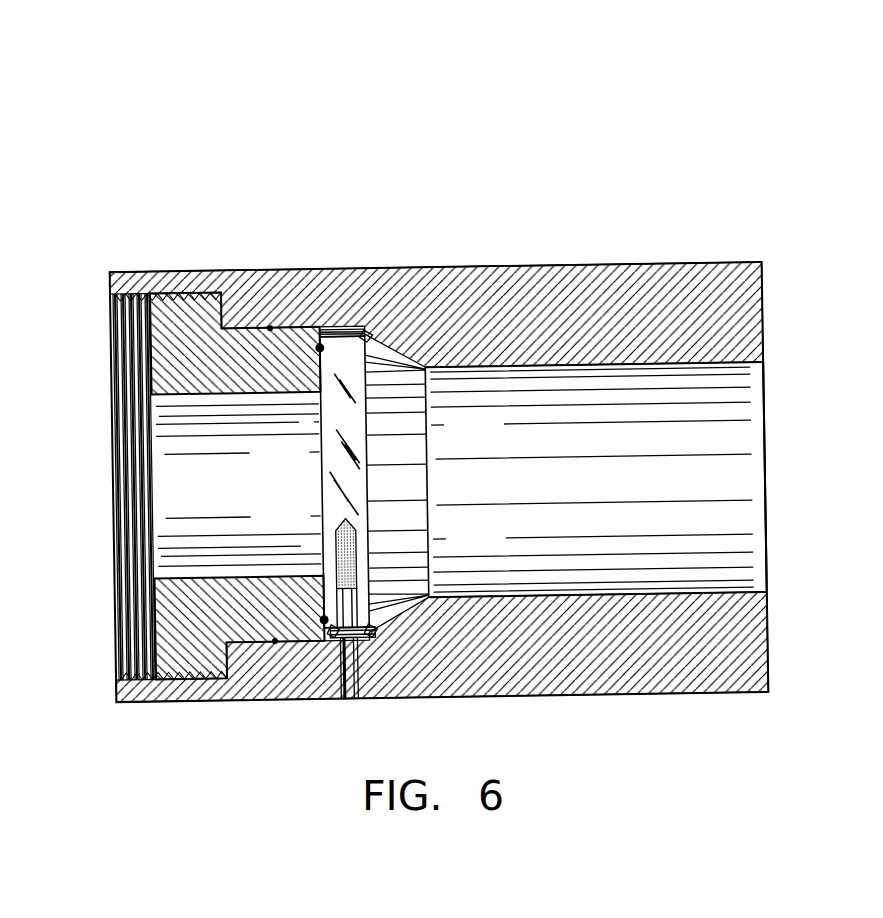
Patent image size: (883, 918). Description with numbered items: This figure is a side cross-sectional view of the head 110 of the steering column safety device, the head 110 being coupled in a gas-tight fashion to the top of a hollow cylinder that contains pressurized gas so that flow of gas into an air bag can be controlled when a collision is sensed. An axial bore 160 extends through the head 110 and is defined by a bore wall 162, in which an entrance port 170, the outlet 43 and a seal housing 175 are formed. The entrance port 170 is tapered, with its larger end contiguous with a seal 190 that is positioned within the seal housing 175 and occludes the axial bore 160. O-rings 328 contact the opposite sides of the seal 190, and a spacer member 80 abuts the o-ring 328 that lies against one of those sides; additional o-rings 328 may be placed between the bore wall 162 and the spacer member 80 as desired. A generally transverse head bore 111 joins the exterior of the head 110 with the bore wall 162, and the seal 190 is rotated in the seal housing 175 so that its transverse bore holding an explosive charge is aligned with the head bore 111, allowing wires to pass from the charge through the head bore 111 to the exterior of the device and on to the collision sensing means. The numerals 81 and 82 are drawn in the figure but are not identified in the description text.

The head 110 is at (381, 114).
The outlet 43 is at (760, 592).
The axial bore 160 is at (156, 521).
The bore wall 162 is at (645, 371).
The entrance port 170 is at (421, 556).
The seal 190 is at (357, 489).
The upper seal 81 is at (369, 336).
The upper O-ring 82 is at (322, 346).
The spacer member 80 is at (323, 614).
The o-rings 328 is at (273, 323).
The seal housing 175 is at (334, 635).
The head bore 111 is at (354, 642).